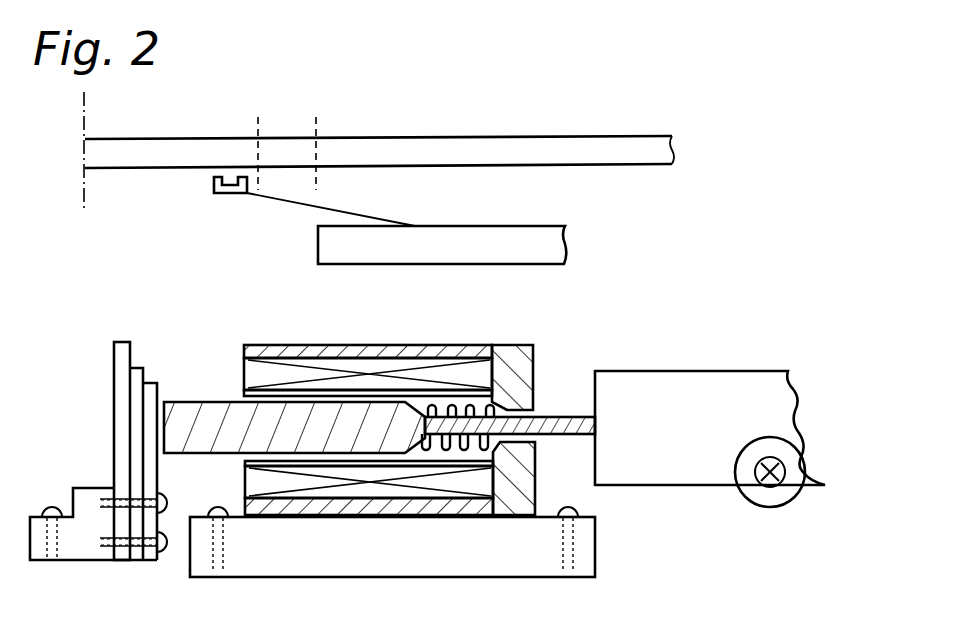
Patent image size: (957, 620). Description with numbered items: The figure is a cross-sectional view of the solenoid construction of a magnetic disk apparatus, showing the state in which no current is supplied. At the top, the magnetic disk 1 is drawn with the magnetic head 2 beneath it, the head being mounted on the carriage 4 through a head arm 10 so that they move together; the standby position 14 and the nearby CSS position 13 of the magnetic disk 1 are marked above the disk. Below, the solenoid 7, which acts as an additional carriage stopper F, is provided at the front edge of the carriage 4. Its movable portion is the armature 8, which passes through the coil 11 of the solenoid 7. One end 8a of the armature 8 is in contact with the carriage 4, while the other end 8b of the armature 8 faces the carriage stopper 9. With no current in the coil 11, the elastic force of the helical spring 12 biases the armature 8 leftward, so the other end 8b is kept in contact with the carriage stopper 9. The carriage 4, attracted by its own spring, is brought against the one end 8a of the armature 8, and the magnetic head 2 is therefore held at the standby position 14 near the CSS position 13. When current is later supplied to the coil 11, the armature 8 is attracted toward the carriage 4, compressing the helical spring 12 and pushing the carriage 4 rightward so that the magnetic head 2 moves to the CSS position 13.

The magnetic disk 1 is at (662, 150).
The magnetic head 2 is at (228, 195).
The carriage 4 is at (688, 457).
The solenoid 7 is at (513, 503).
The armature 8 is at (355, 417).
The one end of the armature 8a is at (574, 415).
The other end of the armature 8b is at (195, 412).
The carriage stopper 9 is at (147, 563).
The head arm 10 is at (545, 250).
The coil 11 is at (272, 482).
The helical spring 12 is at (458, 447).
The CSS position 13 is at (295, 143).
The standby position 14 is at (125, 145).
The additional carriage stopper F is at (482, 338).